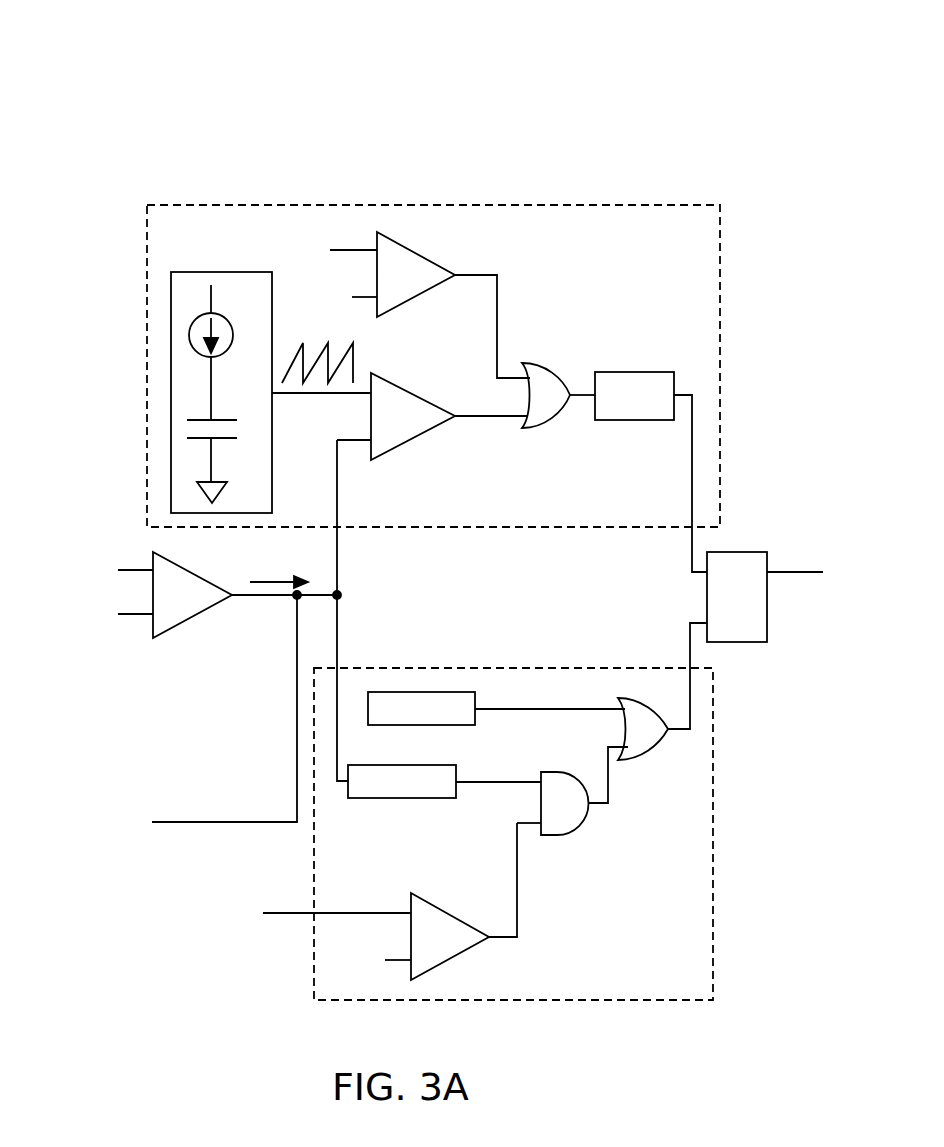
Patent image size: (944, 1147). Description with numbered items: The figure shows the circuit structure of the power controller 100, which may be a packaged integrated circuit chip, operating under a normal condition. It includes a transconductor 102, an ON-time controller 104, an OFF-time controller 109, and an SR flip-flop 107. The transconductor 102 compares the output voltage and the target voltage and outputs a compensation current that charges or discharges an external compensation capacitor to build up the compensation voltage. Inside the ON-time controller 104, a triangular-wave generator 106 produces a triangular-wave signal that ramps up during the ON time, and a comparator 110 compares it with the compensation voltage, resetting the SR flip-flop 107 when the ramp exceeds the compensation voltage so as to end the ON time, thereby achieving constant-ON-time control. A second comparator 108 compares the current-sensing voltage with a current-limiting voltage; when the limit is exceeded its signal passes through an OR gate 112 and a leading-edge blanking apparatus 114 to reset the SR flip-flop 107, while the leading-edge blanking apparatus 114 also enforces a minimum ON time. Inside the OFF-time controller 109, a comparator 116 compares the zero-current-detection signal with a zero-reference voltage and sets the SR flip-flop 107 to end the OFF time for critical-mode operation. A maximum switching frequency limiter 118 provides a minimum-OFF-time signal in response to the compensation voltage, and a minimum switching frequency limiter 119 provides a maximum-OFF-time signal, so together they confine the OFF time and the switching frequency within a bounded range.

The power controller 100 is at (447, 98).
The transconductor 102 is at (188, 620).
The ON-time controller 104 is at (497, 205).
The triangular-wave generator 106 is at (237, 272).
The SR flip-flop 107 is at (730, 552).
The comparator 108 is at (413, 252).
The OFF-time controller 109 is at (313, 940).
The comparator 110 is at (407, 443).
The OR gate 112 is at (552, 365).
The leading-edge blanking (LEB) apparatus 114 is at (630, 372).
The comparator 116 is at (452, 958).
The maximum switching frequency limiter 118 is at (393, 798).
The minimum switching frequency limiter 119 is at (475, 716).